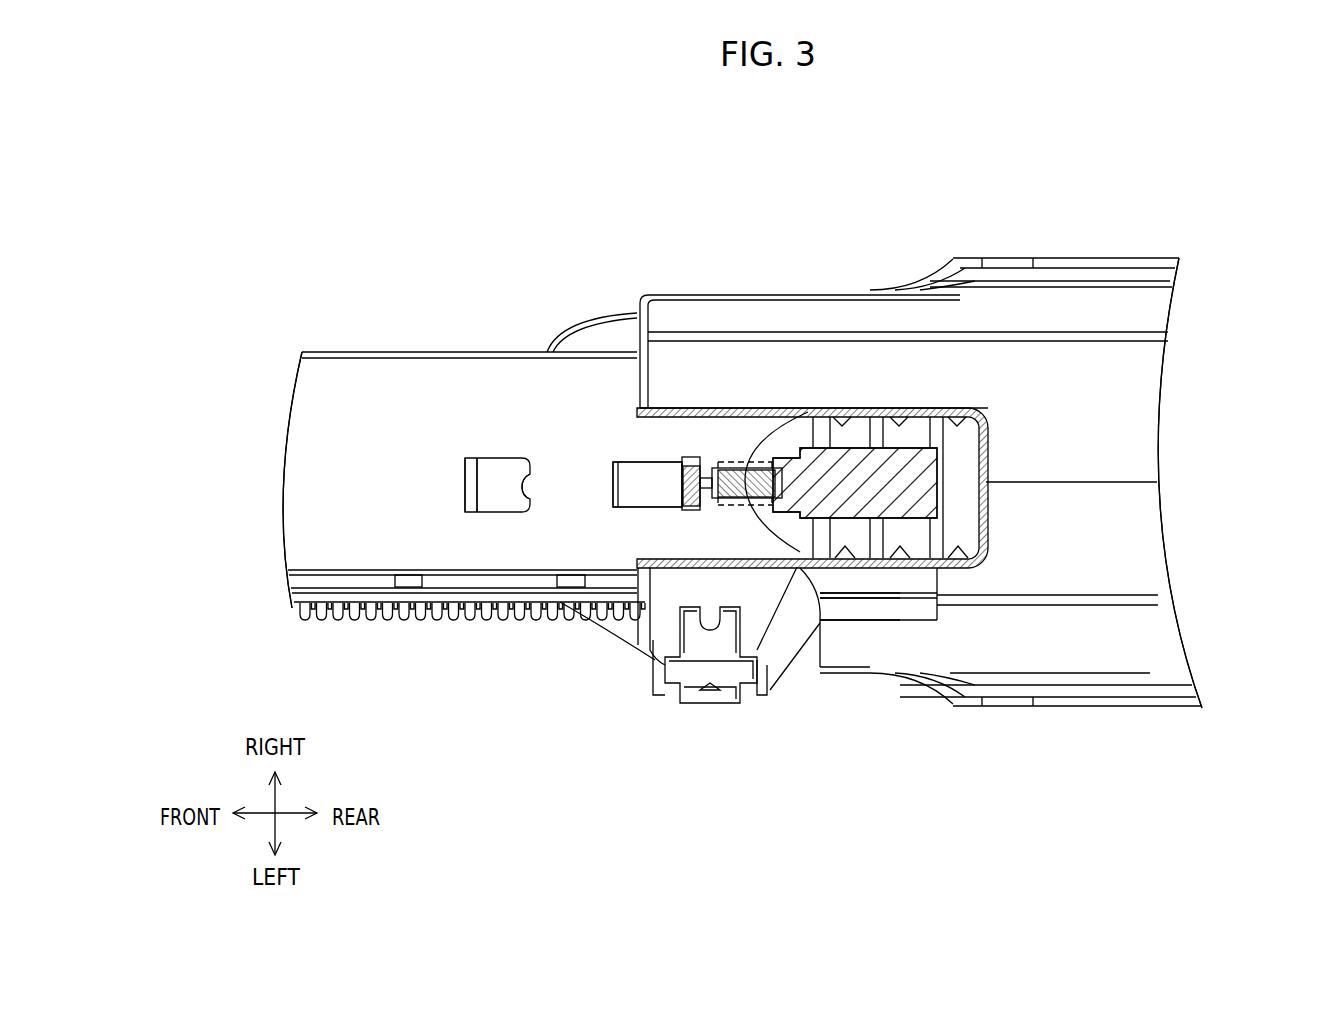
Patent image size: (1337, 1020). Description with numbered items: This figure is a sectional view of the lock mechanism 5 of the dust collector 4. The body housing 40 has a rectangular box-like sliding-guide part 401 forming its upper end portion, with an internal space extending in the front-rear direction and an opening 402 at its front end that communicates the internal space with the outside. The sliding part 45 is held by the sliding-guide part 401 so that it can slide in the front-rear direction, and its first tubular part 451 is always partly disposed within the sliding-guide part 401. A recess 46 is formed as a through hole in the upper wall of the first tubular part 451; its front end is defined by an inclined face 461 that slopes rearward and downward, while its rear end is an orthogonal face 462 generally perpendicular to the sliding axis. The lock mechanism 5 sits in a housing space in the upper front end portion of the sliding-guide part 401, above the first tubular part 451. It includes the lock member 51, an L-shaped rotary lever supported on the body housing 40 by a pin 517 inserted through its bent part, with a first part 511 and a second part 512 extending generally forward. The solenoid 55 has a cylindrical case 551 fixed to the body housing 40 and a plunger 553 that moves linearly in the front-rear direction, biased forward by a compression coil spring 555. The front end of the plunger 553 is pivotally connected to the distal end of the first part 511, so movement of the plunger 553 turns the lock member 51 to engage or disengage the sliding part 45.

The dust collector 4 is at (243, 193).
The body housing 40 is at (1115, 232).
The sliding-guide part 401 is at (1119, 535).
The opening 402 is at (638, 388).
The sliding part 45 is at (343, 338).
The first tubular part 451 is at (318, 410).
The recess 46 is at (498, 458).
The inclined face 461 is at (468, 480).
The orthogonal face 462 is at (527, 478).
The lock mechanism 5 is at (898, 380).
The lock member 51 is at (603, 530).
The first part 511 is at (690, 500).
The second part 512 is at (648, 493).
The pin 517 is at (690, 458).
The solenoid 55 is at (950, 469).
The case 551 is at (870, 477).
The plunger 553 is at (757, 470).
The spring 555 is at (737, 458).